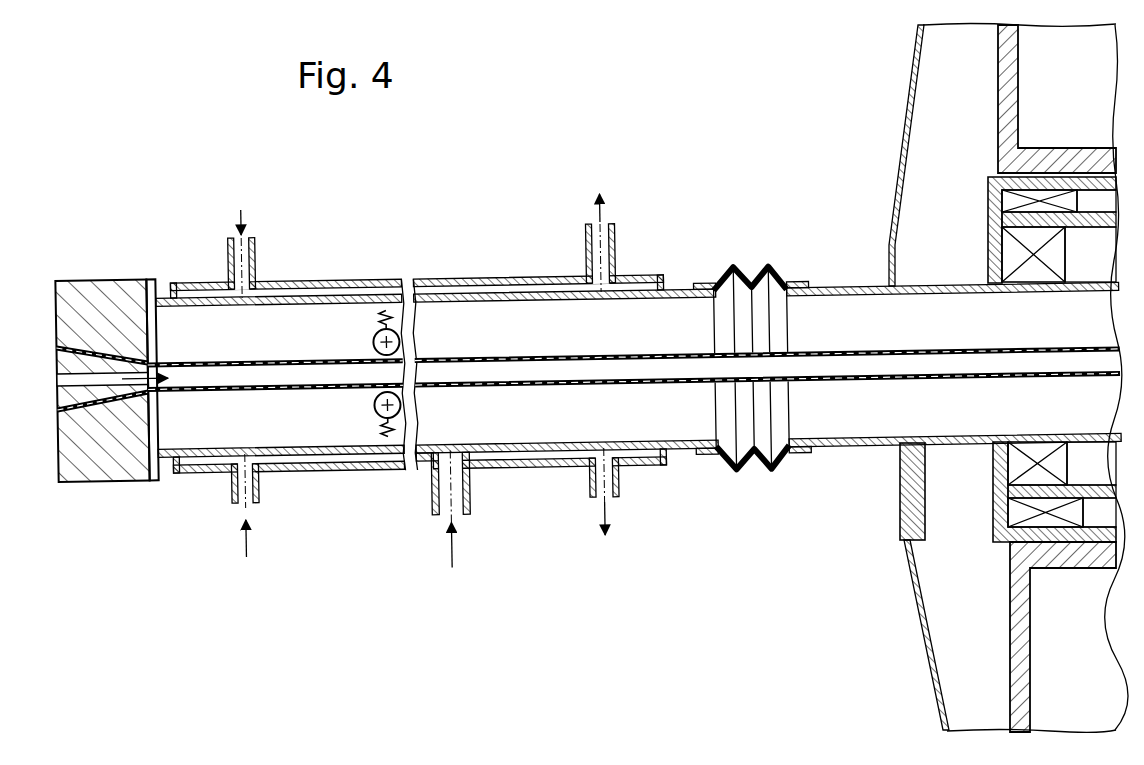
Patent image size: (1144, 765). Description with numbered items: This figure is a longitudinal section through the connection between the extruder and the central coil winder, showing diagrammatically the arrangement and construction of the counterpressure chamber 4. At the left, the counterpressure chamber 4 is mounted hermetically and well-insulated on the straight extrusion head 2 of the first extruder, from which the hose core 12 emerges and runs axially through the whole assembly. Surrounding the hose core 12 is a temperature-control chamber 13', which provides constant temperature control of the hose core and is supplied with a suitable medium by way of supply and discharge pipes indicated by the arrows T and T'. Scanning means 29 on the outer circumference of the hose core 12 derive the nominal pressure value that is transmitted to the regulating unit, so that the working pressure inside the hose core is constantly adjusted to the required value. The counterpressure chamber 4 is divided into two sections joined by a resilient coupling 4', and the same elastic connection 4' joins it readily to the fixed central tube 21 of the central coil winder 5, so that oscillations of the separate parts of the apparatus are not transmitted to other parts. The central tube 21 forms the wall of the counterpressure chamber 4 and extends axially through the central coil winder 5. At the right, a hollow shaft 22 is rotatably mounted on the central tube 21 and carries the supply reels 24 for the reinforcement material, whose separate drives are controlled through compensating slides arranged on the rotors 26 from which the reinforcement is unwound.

The straight extrusion head 2 is at (118, 290).
The counterpressure chamber 4 is at (510, 377).
The resilient coupling 4' is at (752, 341).
The central coil winder 5 is at (880, 167).
The hose core 12 is at (553, 389).
The temperature-control chamber 13' is at (287, 382).
The central tube 21 is at (219, 446).
The hollow shaft 22 is at (1083, 492).
The supply reel 24 is at (1007, 75).
The rotor 26 is at (998, 196).
The scanning means 29 is at (372, 342).